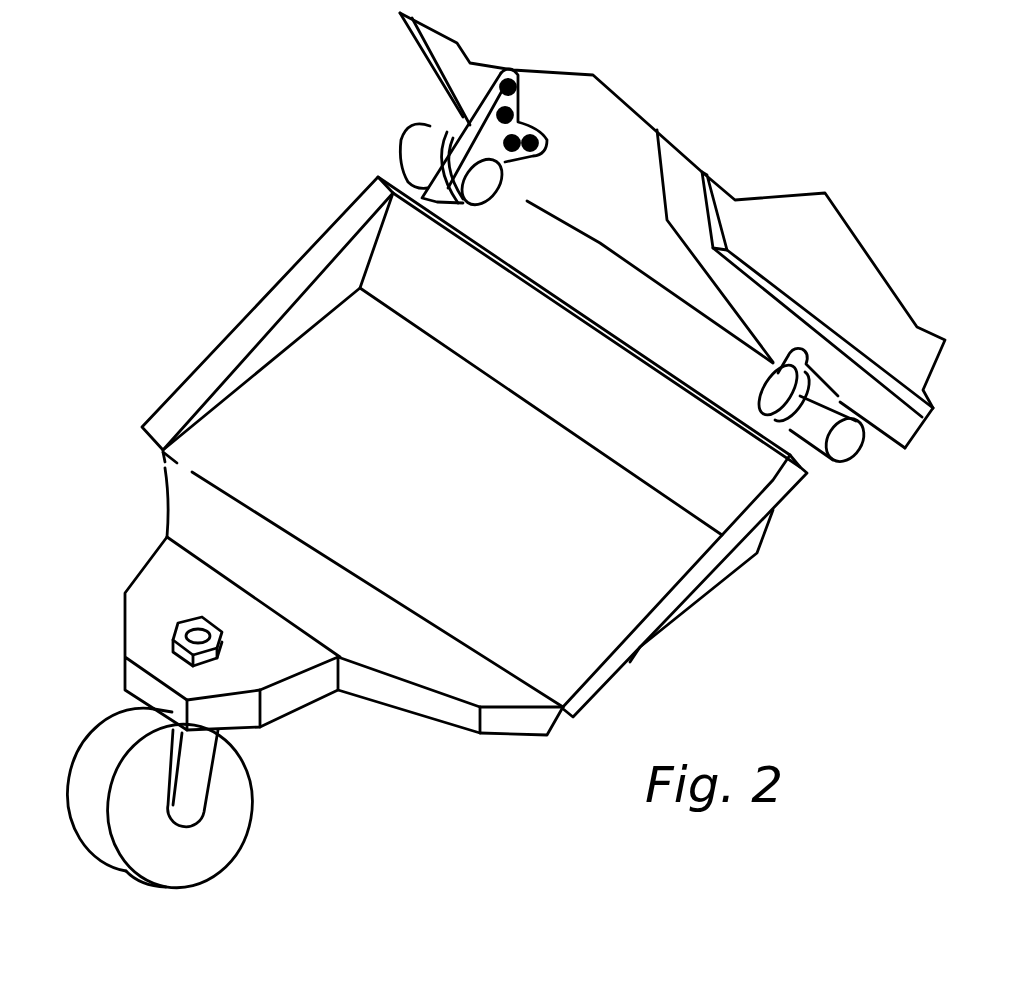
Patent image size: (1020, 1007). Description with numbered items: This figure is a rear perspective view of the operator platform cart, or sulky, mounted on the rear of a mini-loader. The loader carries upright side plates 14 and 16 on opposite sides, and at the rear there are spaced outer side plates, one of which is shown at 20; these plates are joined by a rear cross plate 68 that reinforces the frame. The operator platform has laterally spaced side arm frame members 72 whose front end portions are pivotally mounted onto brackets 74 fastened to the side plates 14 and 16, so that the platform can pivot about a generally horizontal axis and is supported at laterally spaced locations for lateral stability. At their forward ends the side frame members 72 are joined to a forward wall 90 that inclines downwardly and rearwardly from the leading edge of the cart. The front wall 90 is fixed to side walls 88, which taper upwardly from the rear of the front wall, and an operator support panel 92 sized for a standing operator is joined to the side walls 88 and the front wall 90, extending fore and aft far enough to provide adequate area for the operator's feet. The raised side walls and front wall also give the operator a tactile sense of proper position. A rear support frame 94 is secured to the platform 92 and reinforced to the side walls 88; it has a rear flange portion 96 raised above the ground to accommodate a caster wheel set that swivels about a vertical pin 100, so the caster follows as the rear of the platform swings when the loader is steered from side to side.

The upright side plate 14 is at (592, 137).
The upright side plate 16 is at (700, 272).
The outer side plate 20 is at (902, 360).
The rear cross plate 68 is at (893, 425).
The side arm frame member 72 is at (462, 220).
The bracket 74 is at (523, 153).
The side wall 88 is at (285, 325).
The forward wall 90 is at (575, 400).
The operator support panel 92 is at (647, 596).
The rear support frame 94 is at (480, 722).
The rear flange portion 96 is at (260, 665).
The vertical pin 100 is at (192, 600).